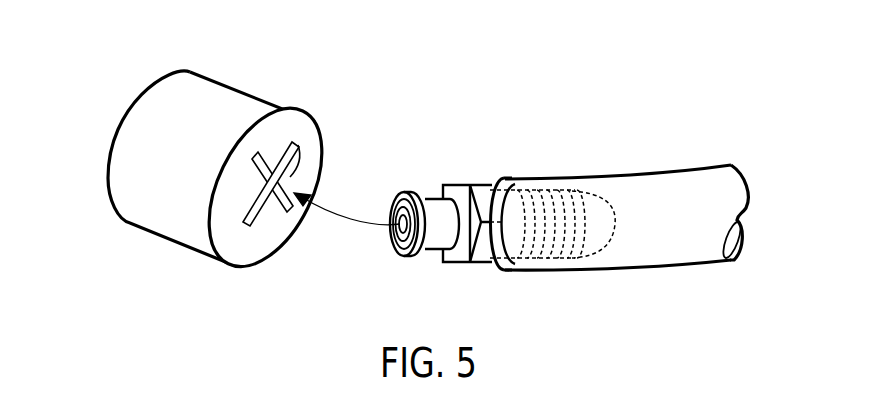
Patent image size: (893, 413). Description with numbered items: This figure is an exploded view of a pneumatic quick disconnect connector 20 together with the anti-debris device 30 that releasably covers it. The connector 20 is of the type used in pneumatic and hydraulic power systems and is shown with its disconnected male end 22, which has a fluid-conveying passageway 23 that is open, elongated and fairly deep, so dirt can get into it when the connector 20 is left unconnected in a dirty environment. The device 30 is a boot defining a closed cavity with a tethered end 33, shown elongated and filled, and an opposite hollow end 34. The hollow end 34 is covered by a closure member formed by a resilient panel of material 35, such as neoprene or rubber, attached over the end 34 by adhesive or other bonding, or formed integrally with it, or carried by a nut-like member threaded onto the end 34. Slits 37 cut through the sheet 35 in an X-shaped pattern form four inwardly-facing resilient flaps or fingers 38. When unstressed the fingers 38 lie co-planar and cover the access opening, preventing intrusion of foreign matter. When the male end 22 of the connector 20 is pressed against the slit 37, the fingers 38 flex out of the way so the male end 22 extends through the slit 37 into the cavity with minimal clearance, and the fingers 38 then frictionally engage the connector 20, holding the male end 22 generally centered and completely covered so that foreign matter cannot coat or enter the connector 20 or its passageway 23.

The quick disconnect connector 20 is at (548, 195).
The male end 22 is at (403, 201).
The fluid-conveying passageway 23 is at (390, 240).
The anti-debris device 30 is at (199, 180).
The tethered end 33 is at (118, 153).
The hollow end 34 is at (190, 232).
The resilient panel of material 35 is at (246, 266).
The slit 37 is at (257, 155).
The resilient flaps or fingers 38 is at (274, 149).